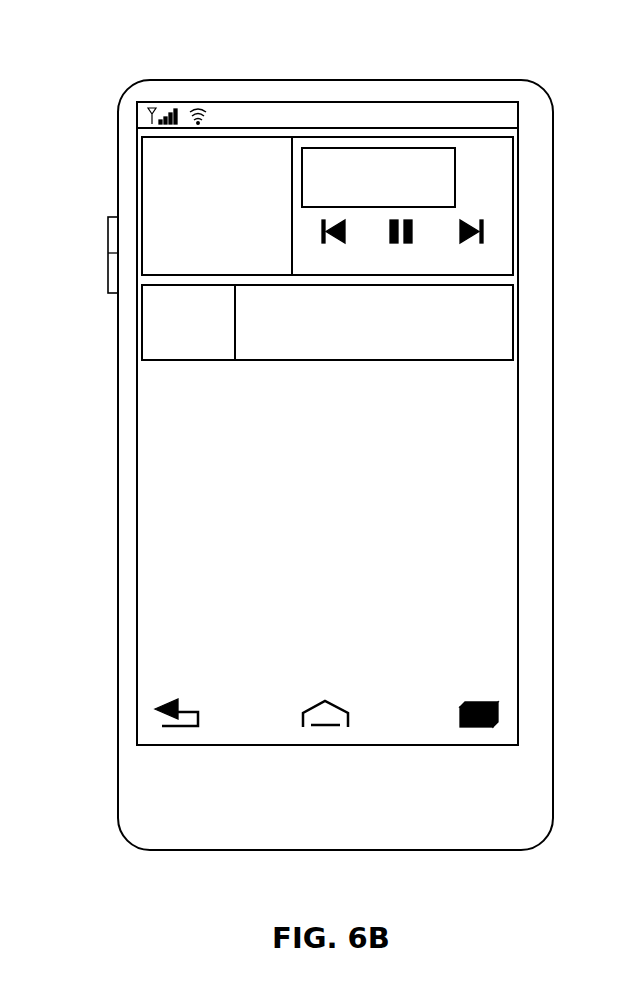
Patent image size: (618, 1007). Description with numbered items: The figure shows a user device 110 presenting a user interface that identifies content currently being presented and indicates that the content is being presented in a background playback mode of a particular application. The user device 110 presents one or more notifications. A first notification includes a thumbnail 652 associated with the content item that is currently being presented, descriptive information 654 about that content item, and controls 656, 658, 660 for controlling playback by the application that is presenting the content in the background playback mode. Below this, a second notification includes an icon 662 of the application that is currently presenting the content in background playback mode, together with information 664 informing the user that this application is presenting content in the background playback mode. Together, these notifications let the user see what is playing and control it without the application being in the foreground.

The user device 110 is at (417, 80).
The thumbnail 652 is at (158, 200).
The descriptive information 654 is at (478, 176).
The control 656 is at (333, 245).
The control 658 is at (402, 245).
The control 660 is at (472, 245).
The icon of the application 662 is at (158, 335).
The information 664 is at (352, 341).